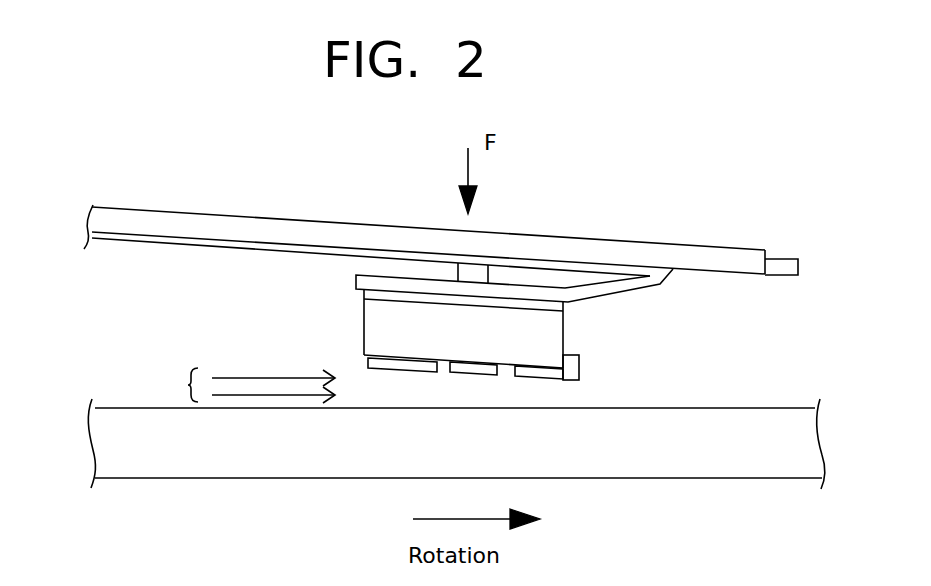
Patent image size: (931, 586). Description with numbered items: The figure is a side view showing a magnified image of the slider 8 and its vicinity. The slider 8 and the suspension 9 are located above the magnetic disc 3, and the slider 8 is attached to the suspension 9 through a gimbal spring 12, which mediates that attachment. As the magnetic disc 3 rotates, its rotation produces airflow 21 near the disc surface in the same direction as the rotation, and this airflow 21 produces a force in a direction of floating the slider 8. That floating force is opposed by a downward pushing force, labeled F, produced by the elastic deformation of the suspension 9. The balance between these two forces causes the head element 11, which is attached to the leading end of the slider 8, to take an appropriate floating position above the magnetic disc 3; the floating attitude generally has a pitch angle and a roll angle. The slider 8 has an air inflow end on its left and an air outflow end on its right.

The magnetic disc 3 is at (119, 413).
The slider 8 is at (364, 332).
The suspension 9 is at (252, 215).
The head element 11 is at (580, 357).
The gimbal spring 12 is at (361, 274).
The airflow 21 is at (188, 385).